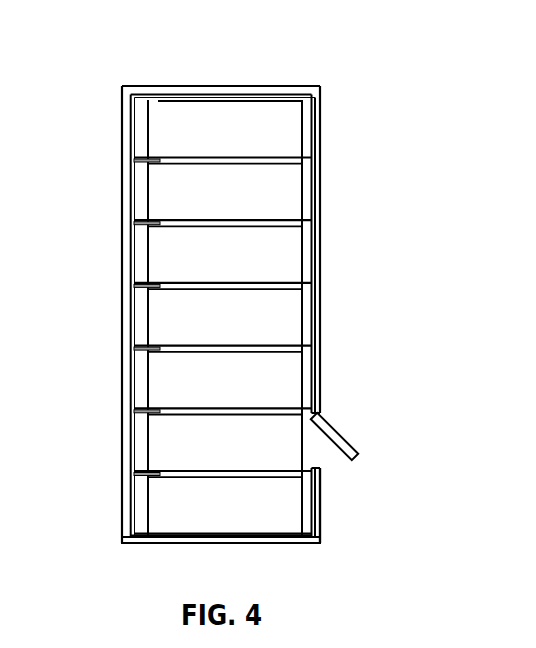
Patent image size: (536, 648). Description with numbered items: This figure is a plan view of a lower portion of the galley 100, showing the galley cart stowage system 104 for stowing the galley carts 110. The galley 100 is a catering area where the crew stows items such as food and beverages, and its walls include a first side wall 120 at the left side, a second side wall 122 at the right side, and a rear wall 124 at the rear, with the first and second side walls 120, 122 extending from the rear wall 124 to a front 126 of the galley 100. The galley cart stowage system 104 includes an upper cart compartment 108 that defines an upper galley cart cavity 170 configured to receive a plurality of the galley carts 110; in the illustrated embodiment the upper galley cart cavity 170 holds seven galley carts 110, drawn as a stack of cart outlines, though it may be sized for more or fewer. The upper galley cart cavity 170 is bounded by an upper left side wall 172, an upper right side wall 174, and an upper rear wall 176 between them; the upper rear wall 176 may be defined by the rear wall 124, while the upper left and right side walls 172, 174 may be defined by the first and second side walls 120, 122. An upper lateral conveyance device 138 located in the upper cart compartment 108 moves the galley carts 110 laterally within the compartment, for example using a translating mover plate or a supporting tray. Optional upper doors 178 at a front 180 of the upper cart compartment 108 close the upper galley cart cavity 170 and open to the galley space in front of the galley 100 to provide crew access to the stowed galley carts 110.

The galley 100 is at (330, 81).
The galley cart stowage system 104 is at (171, 72).
The upper cart compartment 108 is at (305, 158).
The galley cart 110 is at (275, 245).
The first side wall 120 is at (242, 544).
The second side wall 122 is at (262, 89).
The rear wall 124 is at (122, 462).
The front 126 is at (322, 541).
The upper lateral conveyance device 138 is at (145, 481).
The upper galley cart cavity 170 is at (142, 215).
The upper left side wall 172 is at (170, 541).
The upper right side wall 174 is at (190, 92).
The upper rear wall 176 is at (122, 346).
The upper doors 178 is at (338, 430).
The front 180 is at (318, 283).